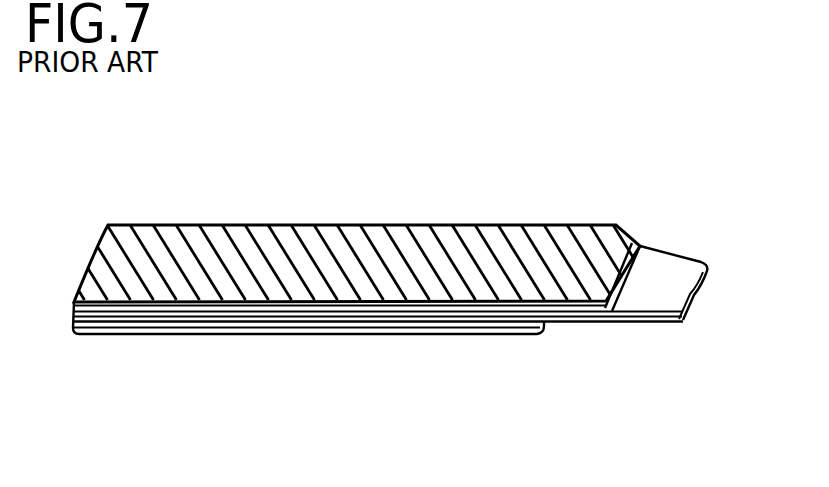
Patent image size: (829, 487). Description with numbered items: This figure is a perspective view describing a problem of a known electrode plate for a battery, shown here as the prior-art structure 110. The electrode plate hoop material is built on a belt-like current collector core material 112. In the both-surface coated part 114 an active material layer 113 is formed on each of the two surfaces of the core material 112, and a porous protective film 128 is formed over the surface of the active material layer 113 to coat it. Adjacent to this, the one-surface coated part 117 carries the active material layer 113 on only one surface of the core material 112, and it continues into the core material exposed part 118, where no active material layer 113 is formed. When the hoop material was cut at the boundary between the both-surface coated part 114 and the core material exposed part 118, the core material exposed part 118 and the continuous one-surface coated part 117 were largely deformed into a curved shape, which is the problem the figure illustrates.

The hatched rigid substrate (prior art) 110 is at (360, 231).
The active material layer 113 is at (339, 358).
The porous protective film 128 is at (393, 285).
The belt-like current collector core material 112 is at (493, 313).
The both-surface coated part 114 is at (453, 334).
The one-surface coated part 117 is at (568, 325).
The core material exposed part 118 is at (648, 325).